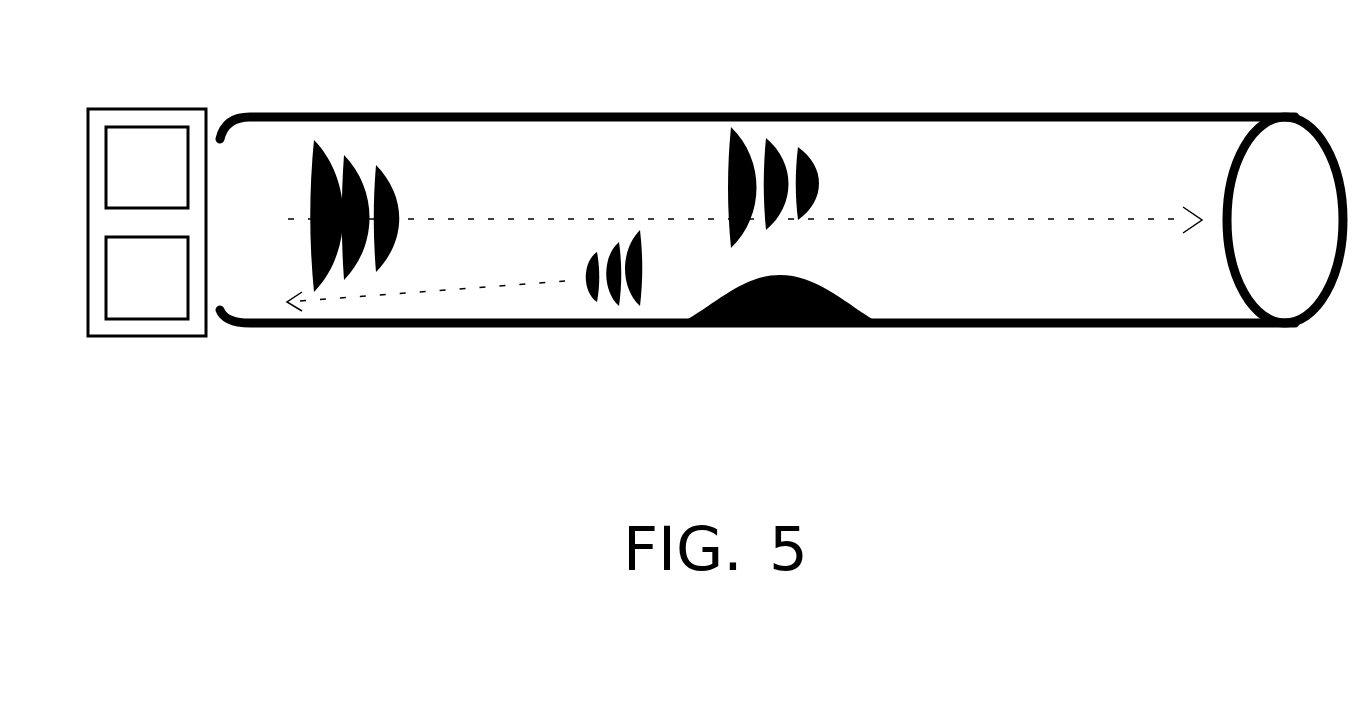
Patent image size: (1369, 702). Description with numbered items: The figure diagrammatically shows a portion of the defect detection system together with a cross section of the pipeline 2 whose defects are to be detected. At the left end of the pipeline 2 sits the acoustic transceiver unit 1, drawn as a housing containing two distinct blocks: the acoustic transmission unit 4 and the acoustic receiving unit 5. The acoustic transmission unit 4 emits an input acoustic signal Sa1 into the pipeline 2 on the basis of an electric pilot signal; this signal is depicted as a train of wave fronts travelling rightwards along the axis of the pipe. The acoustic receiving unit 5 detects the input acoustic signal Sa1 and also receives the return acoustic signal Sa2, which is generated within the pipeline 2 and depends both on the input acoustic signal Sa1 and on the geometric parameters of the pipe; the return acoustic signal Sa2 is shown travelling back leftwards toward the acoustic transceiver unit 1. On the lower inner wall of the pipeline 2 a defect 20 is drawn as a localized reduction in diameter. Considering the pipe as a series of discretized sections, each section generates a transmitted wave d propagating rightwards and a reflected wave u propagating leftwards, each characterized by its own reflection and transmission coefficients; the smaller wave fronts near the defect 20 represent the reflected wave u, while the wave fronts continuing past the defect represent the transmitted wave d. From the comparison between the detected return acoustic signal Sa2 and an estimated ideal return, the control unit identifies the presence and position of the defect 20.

The acoustic transceiver unit 1 is at (147, 173).
The pipeline 2 is at (983, 140).
The acoustic transmission unit 4 is at (157, 183).
The acoustic receiving unit 5 is at (157, 299).
The defect 20 is at (805, 330).
The input acoustic signal Sa1 is at (330, 157).
The return acoustic signal Sa2 is at (396, 297).
The transmitted wave d is at (741, 120).
The reflected wave u is at (609, 290).